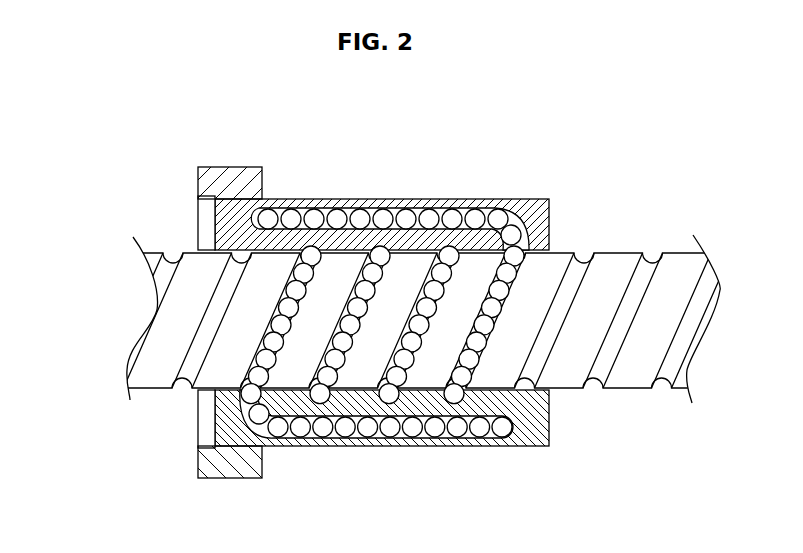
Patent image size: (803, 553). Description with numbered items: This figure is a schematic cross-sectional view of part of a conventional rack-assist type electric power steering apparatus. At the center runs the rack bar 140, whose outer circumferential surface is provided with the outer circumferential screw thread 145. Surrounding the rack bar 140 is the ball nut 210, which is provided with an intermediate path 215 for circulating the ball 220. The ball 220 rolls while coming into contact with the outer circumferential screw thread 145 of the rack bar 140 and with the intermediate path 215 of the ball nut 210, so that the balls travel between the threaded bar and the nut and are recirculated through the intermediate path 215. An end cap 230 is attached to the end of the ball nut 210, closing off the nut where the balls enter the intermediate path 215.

The rack bar 140 is at (148, 358).
The outer circumferential screw thread 145 is at (185, 377).
The ball nut 210 is at (533, 437).
The intermediate path 215 is at (255, 220).
The ball 220 is at (427, 215).
The end cap 230 is at (232, 172).